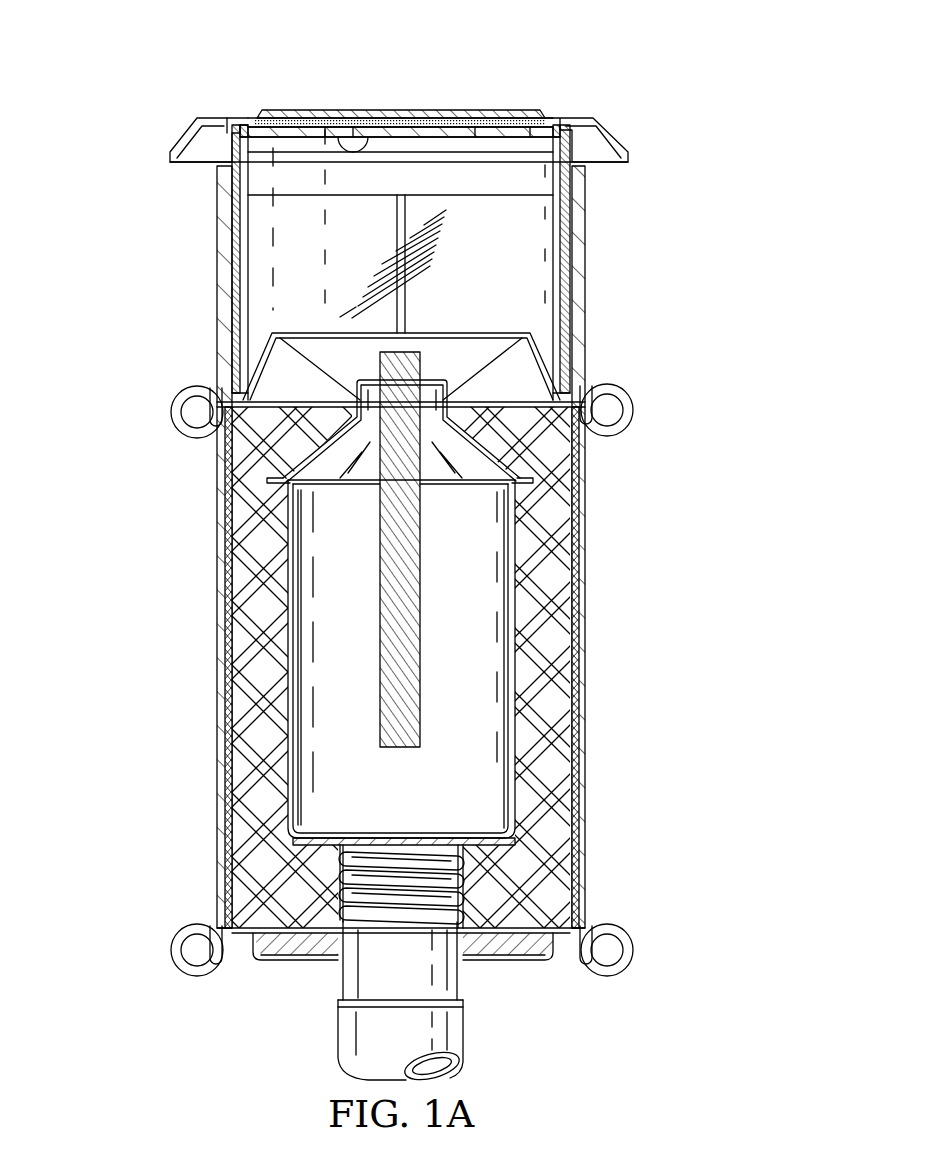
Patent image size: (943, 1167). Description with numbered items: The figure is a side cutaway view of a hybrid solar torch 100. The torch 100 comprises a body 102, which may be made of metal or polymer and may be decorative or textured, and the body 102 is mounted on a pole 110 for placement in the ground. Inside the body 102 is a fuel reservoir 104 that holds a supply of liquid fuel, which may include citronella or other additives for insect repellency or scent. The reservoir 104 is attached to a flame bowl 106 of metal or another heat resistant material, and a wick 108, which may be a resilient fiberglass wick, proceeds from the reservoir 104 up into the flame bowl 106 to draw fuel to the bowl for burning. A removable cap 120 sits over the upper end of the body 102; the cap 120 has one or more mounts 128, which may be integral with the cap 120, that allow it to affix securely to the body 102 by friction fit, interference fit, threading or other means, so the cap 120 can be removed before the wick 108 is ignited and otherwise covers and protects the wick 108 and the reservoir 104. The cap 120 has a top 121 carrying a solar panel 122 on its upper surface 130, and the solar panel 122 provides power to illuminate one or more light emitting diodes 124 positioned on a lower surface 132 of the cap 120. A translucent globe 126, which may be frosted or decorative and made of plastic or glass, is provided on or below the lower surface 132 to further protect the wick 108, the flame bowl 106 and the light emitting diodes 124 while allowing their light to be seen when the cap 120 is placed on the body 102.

The torch 100 is at (562, 62).
The body 102 is at (143, 453).
The fuel reservoir 104 is at (383, 808).
The flame bowl 106 is at (448, 343).
The wick 108 is at (424, 596).
The pole 110 is at (338, 1027).
The cap 120 is at (143, 115).
The top 121 is at (608, 133).
The solar panel 122 is at (455, 110).
The light emitting diodes 124 is at (465, 147).
The globe 126 is at (567, 256).
The mounts 128 is at (205, 392).
The upper surface 130 is at (240, 117).
The lower surface 132 is at (347, 118).